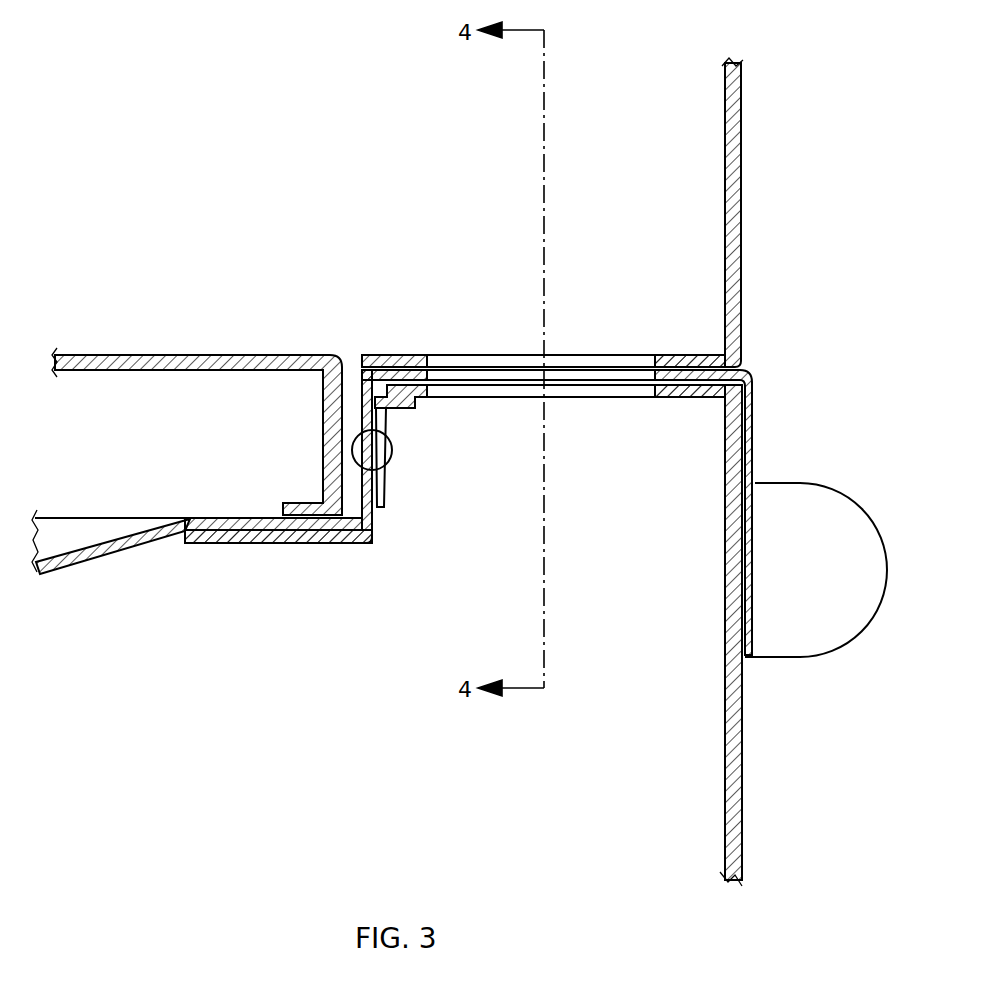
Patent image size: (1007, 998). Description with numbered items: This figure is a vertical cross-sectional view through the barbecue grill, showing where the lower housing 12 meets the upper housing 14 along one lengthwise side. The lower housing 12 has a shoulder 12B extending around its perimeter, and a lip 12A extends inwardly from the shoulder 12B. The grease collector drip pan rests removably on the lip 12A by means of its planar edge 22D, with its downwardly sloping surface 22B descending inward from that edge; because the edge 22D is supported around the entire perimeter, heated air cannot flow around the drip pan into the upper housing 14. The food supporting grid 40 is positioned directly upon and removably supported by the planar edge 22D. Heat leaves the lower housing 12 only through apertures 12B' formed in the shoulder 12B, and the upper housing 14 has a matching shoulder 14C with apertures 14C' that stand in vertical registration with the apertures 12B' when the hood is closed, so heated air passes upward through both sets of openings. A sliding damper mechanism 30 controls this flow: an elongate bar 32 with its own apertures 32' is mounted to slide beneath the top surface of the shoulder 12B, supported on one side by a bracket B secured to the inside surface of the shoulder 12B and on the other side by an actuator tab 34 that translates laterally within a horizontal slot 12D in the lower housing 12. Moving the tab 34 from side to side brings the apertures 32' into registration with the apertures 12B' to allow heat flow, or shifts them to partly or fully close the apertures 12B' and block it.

The lower housing 12 is at (742, 790).
The lip 12A is at (243, 543).
The shoulder 12B is at (420, 424).
The apertures 12B' is at (663, 482).
The horizontal slot 12D is at (752, 385).
The upper housing 14 is at (741, 232).
The shoulder 14C is at (503, 324).
The apertures 14C' is at (660, 323).
The downwardly sloping surface 22B is at (163, 573).
The planar edge 22D is at (215, 518).
The sliding damper mechanism 30 is at (808, 710).
The elongate bar 32 is at (576, 427).
The apertures 32' is at (513, 415).
The actuator tab 34 is at (812, 575).
The food supporting grid 40 is at (215, 355).
The bracket B is at (386, 468).